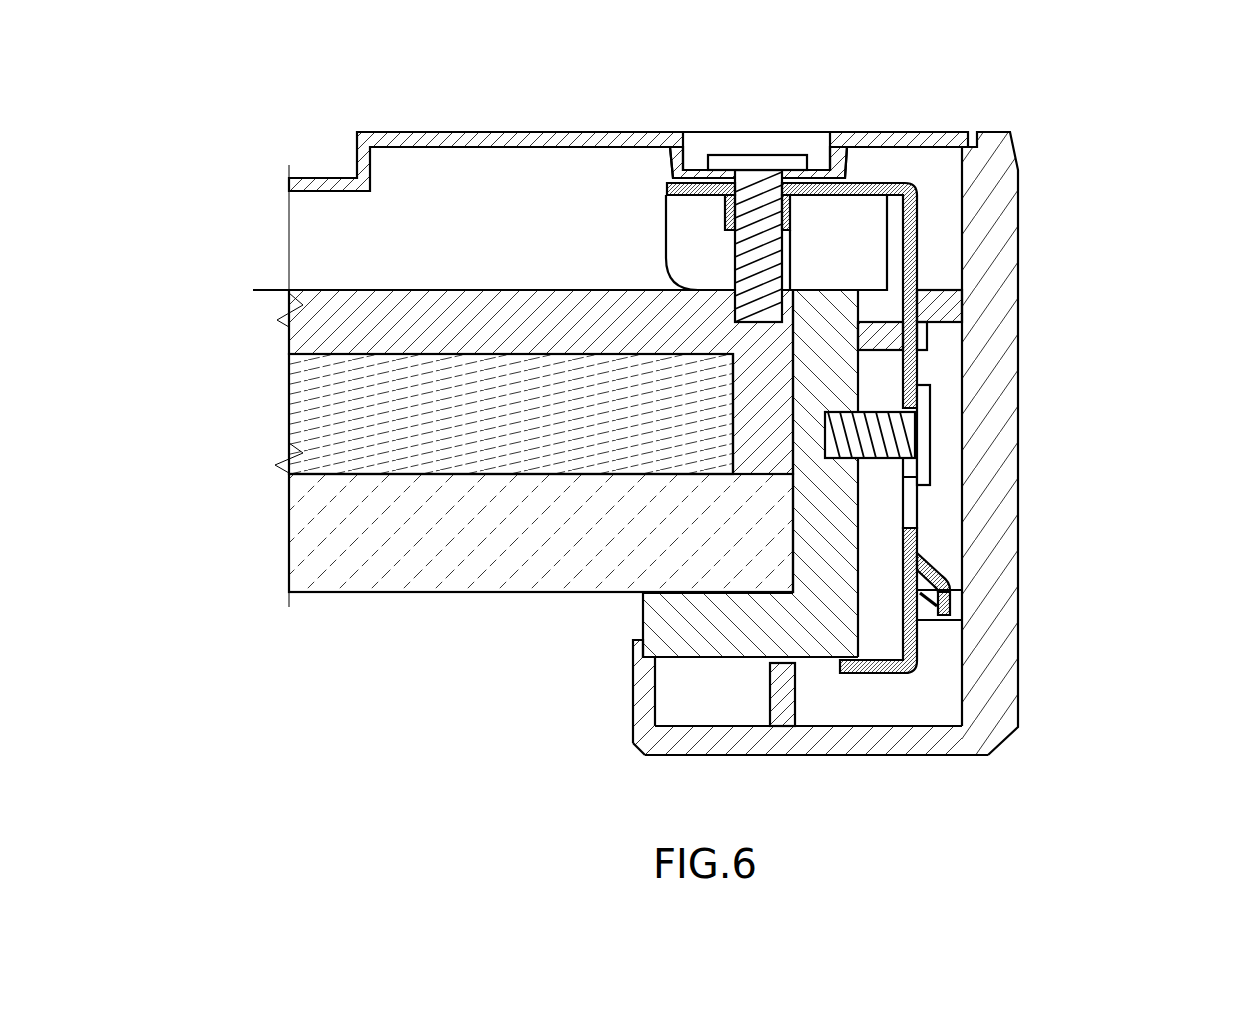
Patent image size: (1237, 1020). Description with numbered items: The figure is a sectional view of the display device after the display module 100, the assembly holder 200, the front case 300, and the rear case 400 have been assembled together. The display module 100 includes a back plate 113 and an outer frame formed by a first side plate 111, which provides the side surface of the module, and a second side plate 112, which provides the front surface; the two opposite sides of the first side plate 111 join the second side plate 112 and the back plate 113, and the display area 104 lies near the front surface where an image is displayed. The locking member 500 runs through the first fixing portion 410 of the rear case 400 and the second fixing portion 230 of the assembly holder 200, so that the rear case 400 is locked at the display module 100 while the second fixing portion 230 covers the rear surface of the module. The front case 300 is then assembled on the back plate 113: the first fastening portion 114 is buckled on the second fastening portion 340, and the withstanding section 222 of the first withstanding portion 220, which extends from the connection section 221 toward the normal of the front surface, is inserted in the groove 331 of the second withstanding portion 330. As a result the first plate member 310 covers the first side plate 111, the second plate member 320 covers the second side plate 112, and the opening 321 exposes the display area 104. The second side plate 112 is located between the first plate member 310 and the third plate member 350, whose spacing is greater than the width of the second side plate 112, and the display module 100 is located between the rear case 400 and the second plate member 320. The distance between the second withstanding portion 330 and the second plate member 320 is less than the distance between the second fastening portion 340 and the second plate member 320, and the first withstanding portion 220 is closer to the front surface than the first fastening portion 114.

The display module 100 is at (262, 417).
The display area 104 is at (497, 592).
The first side plate 111 is at (825, 530).
The second side plate 112 is at (655, 632).
The back plate 113 is at (297, 330).
The first fastening portion 114 is at (928, 340).
The assembly holder 200 is at (926, 182).
The first withstanding portion 220 is at (993, 600).
The connection section 221 is at (918, 556).
The withstanding section 222 is at (952, 600).
The second fixing portion 230 is at (724, 190).
The front case 300 is at (897, 471).
The first plate member 310 is at (1000, 695).
The second plate member 320 is at (873, 755).
The opening 321 is at (612, 742).
The second withstanding portion 330 is at (938, 636).
The groove 331 is at (955, 605).
The second fastening portion 340 is at (945, 300).
The third plate member 350 is at (640, 708).
The rear case 400 is at (889, 121).
The first fixing portion 410 is at (840, 147).
The locking member 500 is at (757, 165).